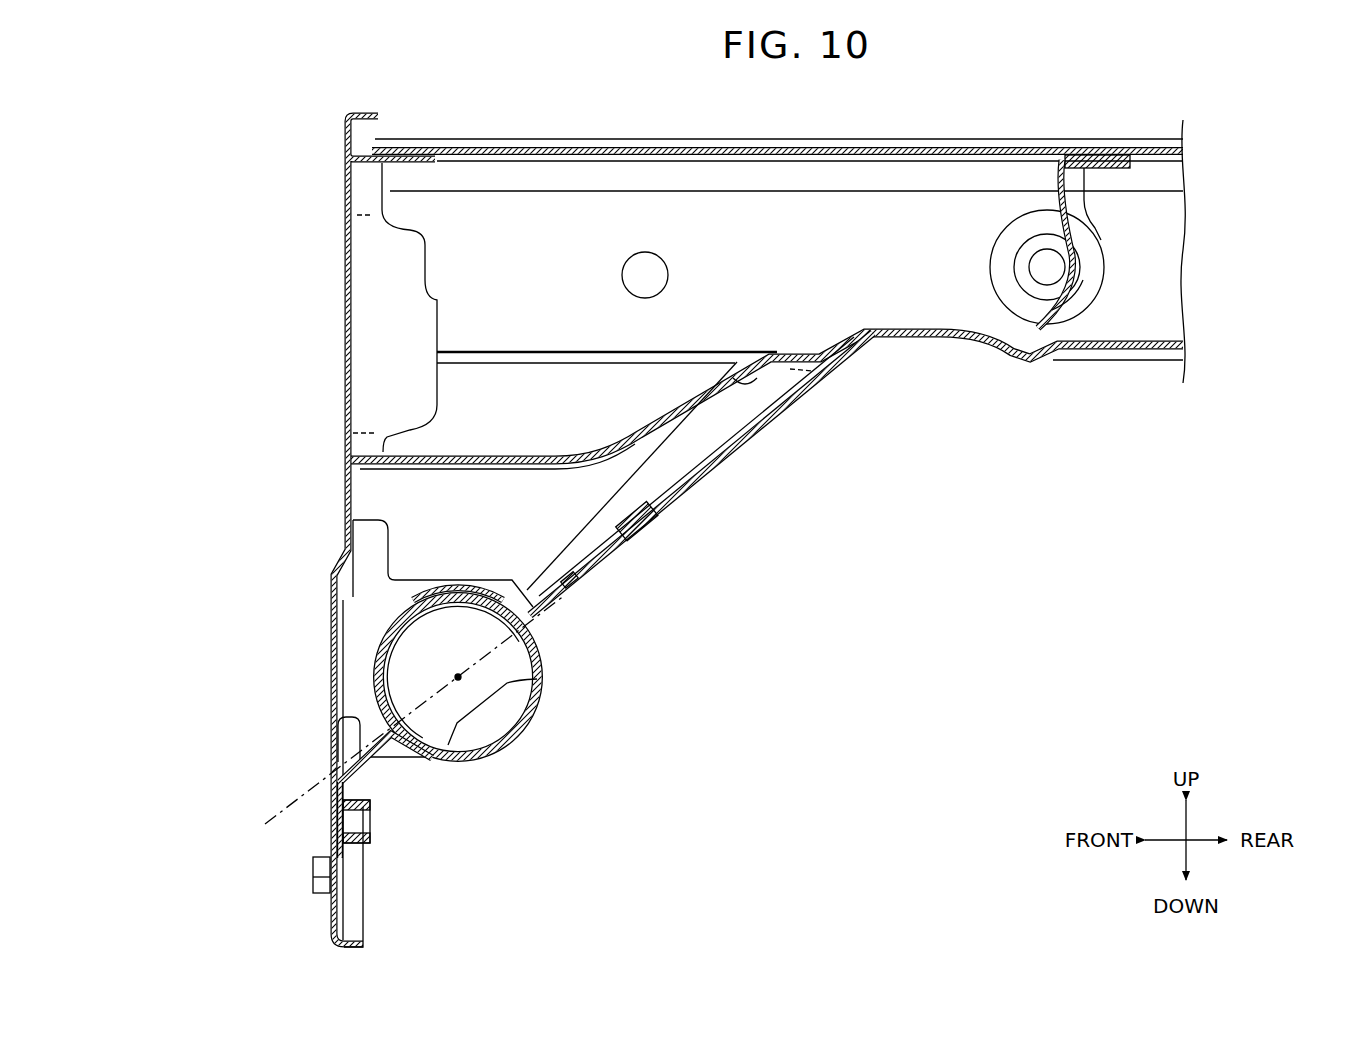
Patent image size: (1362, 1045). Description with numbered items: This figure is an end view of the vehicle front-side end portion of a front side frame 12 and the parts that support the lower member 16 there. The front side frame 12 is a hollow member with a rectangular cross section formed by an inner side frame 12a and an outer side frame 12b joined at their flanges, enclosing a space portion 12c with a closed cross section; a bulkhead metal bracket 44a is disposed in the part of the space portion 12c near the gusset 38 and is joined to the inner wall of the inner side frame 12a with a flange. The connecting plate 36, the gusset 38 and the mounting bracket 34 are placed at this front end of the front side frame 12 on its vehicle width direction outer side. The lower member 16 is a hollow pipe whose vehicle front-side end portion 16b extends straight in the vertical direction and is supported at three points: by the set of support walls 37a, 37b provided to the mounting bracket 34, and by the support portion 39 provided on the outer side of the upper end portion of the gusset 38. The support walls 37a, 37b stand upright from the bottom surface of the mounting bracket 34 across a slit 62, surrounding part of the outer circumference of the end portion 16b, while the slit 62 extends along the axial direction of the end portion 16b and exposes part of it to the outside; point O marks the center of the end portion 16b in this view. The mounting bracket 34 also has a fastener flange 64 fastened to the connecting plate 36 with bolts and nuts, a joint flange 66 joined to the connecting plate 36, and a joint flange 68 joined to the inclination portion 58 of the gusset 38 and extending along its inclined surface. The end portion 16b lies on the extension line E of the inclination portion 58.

The front side frame 12 is at (767, 296).
The inner side frame 12a is at (553, 139).
The outer side frame 12b is at (678, 415).
The space portion 12c is at (852, 263).
The bulkhead metal bracket 44a is at (1048, 178).
The lower member 16 is at (425, 723).
The vehicle front-side end portion 16b is at (425, 723).
The mounting bracket 34 is at (392, 752).
The connecting plate 36 is at (337, 531).
The support wall 37a is at (548, 643).
The support wall 37b is at (432, 762).
The gusset 38 is at (657, 528).
The support portion 39 is at (390, 605).
The inclination portion 58 is at (700, 485).
The slit 62 is at (542, 680).
The fastener flange 64 is at (356, 772).
The joint flange 66 is at (338, 659).
The joint flange 68 is at (580, 590).
The center of mounting tube O is at (472, 675).
The extension line E is at (265, 824).